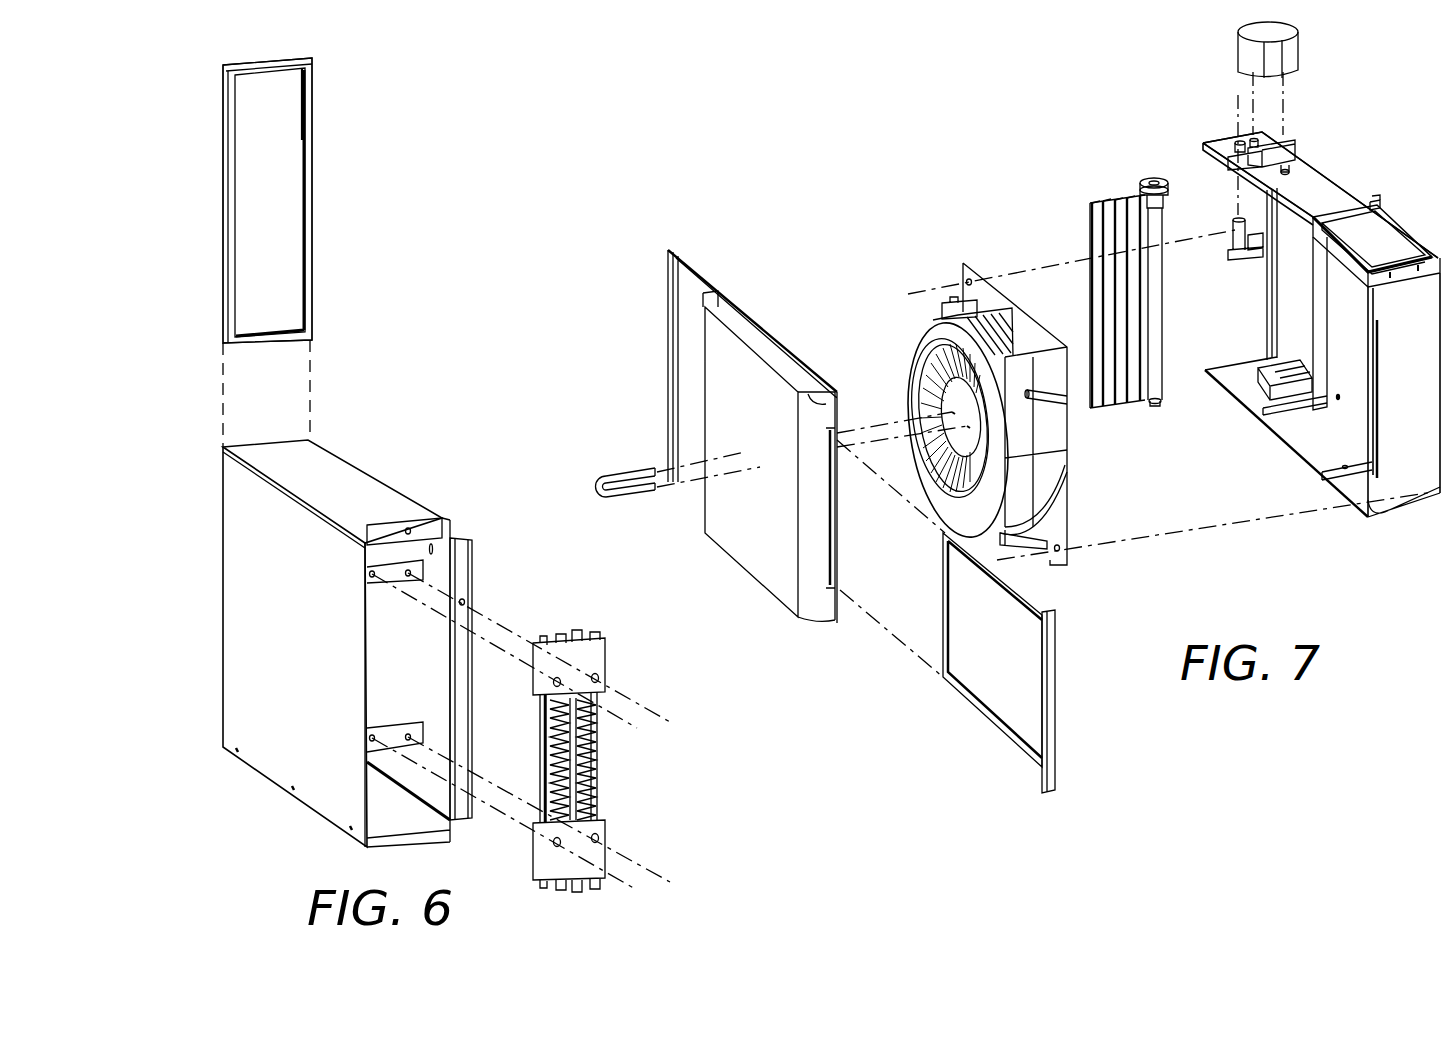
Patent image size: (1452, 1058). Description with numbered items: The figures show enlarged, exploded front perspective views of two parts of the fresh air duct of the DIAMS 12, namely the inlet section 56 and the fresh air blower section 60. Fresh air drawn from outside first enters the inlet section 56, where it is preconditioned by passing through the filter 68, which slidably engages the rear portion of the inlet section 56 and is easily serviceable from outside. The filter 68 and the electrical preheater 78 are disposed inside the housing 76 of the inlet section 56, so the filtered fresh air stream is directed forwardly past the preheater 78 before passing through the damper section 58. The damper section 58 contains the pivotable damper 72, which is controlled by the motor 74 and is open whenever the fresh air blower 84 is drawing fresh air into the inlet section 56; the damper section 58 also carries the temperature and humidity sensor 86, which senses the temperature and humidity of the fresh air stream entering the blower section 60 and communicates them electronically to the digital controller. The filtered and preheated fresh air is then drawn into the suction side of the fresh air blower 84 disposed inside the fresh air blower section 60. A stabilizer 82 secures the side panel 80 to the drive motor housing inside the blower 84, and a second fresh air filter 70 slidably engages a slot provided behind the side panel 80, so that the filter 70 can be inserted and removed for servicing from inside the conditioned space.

In FIG. 6, the DIAMS 12 is at (572, 180).
In FIG. 6, the filter 68 is at (232, 155).
In FIG. 6, the fresh air inlet section 56 is at (370, 468).
In FIG. 6, the housing 76 is at (282, 760).
In FIG. 6, the electrical preheater 78 is at (605, 770).
In FIG. 7, the stabilizer 82 is at (622, 478).
In FIG. 7, the side panel 80 is at (755, 530).
In FIG. 7, the fresh air blower 84 is at (925, 345).
In FIG. 7, the damper 72 is at (1122, 172).
In FIG. 7, the damper section 58 is at (1196, 136).
In FIG. 7, the motor 74 is at (1245, 53).
In FIG. 7, the temperature and humidity sensor 86 is at (1232, 250).
In FIG. 7, the fresh air blower section 60 is at (1085, 566).
In FIG. 7, the second fresh air filter 70 is at (1050, 712).